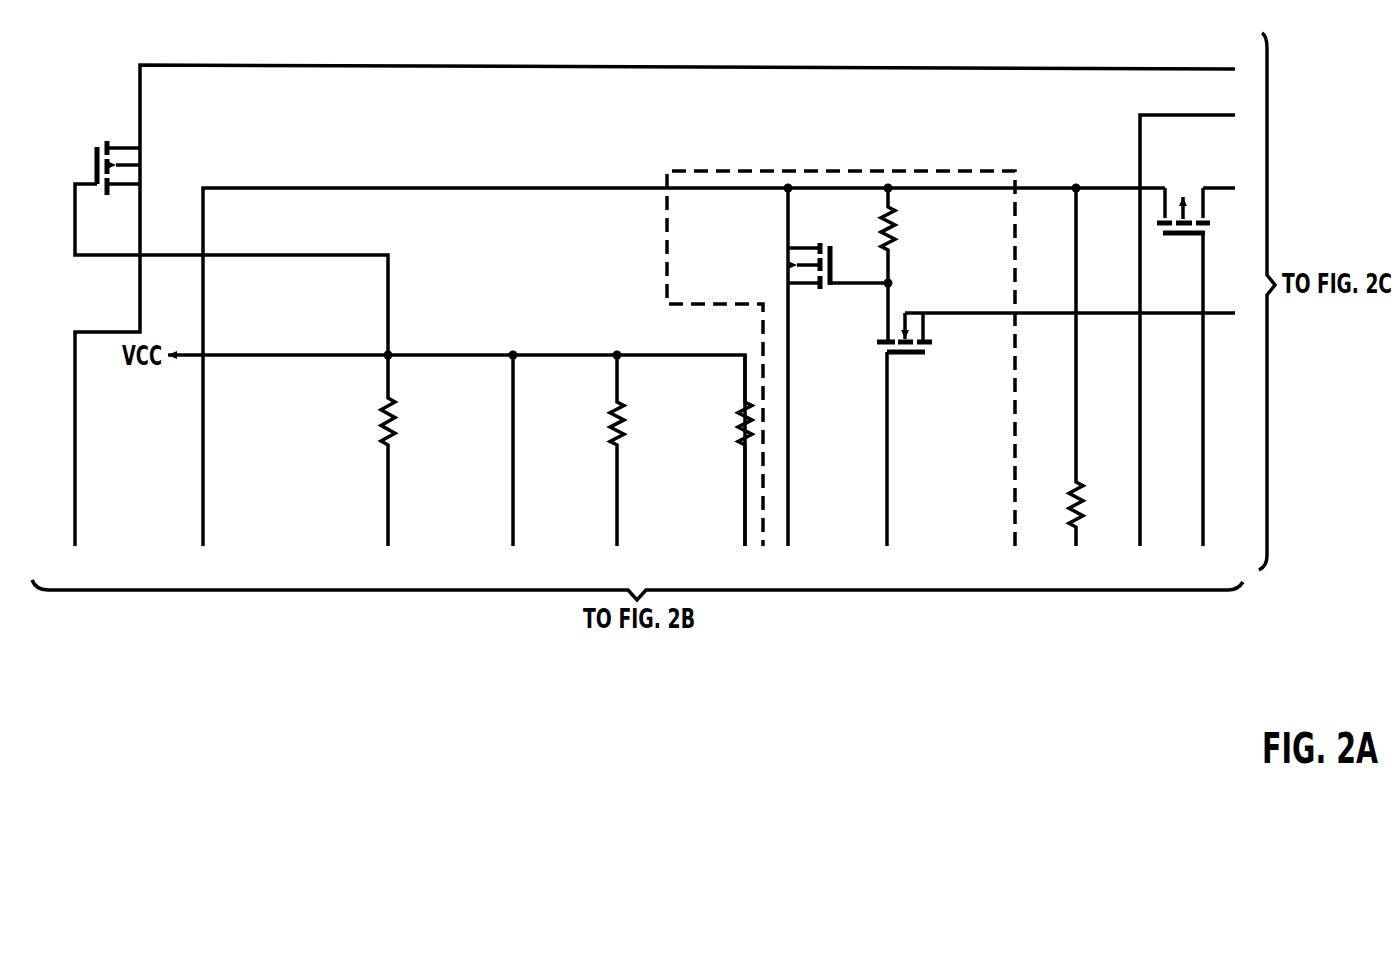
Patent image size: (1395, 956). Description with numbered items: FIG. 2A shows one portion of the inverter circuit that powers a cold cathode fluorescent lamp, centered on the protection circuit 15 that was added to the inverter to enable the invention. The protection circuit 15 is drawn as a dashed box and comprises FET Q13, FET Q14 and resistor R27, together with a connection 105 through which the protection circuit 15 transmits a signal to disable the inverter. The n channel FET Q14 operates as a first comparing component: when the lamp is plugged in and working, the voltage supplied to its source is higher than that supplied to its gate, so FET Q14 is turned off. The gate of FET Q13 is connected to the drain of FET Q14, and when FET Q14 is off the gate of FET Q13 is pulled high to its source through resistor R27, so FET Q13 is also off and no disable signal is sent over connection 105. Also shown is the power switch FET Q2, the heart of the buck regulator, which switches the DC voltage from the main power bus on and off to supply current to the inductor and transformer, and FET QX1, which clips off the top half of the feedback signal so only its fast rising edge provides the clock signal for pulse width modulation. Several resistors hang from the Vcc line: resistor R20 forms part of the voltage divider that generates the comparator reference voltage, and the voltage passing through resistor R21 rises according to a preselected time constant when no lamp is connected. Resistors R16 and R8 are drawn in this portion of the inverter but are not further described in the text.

The FET QX1 is at (231, 229).
The protection circuit 15 is at (667, 262).
The connection 105 is at (788, 508).
The FET Q13 is at (813, 266).
The resistor R27 is at (910, 235).
The FET Q14 is at (926, 414).
The power switch FET Q2 is at (1196, 353).
The resistor R20 is at (410, 450).
The resistor R16 is at (638, 450).
The resistor R21 is at (724, 450).
The resistor R8 is at (1057, 367).